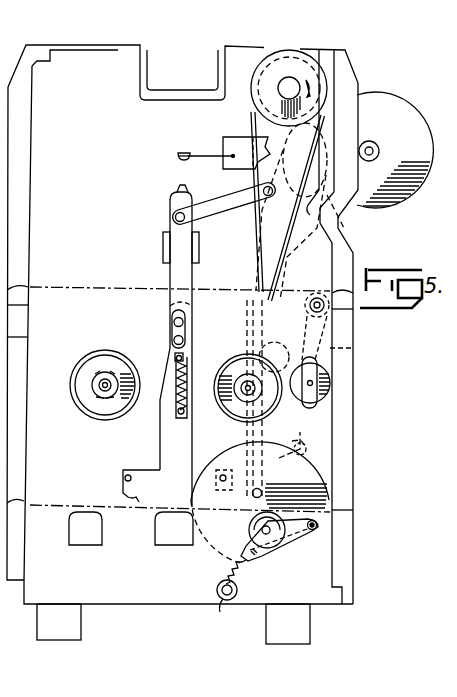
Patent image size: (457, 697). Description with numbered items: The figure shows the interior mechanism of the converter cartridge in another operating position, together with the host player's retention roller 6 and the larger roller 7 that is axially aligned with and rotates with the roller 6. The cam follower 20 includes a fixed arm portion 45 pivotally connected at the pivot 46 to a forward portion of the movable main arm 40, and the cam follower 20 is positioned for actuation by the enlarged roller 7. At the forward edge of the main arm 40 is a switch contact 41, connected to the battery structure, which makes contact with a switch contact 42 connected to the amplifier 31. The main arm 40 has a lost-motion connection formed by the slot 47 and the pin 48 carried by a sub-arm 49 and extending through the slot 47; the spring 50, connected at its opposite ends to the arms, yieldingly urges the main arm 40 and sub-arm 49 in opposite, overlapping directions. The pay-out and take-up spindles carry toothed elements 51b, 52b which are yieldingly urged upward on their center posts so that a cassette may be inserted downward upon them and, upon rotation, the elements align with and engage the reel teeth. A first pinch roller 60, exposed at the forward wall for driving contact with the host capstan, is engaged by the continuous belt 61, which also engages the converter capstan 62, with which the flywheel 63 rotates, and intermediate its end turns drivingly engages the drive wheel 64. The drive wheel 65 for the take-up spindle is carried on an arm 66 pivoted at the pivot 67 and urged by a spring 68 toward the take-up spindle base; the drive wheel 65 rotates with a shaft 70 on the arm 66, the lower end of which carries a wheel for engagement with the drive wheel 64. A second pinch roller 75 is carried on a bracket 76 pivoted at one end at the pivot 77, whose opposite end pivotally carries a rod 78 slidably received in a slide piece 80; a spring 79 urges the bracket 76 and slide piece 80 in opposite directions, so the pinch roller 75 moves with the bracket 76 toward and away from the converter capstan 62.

The retention roller 6 is at (378, 150).
The larger roller 7 is at (404, 98).
The cam follower 20 is at (296, 231).
The amplifier 31 is at (231, 137).
The main arm 40 is at (170, 204).
The switch contact 41 is at (179, 190).
The switch contact 42 is at (176, 156).
The fixed arm portion 45 is at (214, 218).
The pivot 46 is at (176, 219).
The slot 47 is at (173, 340).
The pin 48 is at (173, 320).
The sub-arm 49 is at (160, 446).
The spring 50 is at (173, 396).
The toothed element 51b is at (100, 402).
The toothed element 52b is at (245, 370).
The first pinch roller 60 is at (286, 52).
The continuous belt 61 is at (255, 264).
The converter capstan 62 is at (252, 494).
The flywheel 63 is at (331, 471).
The drive wheel 64 is at (296, 337).
The drive wheel 65 is at (331, 372).
The arm 66 is at (344, 348).
The pivot 67 is at (323, 310).
The spring 68 is at (308, 291).
The shaft 70 is at (313, 385).
The second pinch roller 75 is at (250, 526).
The bracket 76 is at (289, 549).
The pivot 77 is at (318, 522).
The rod 78 is at (228, 600).
The spring 79 is at (217, 584).
The slide piece 80 is at (216, 600).